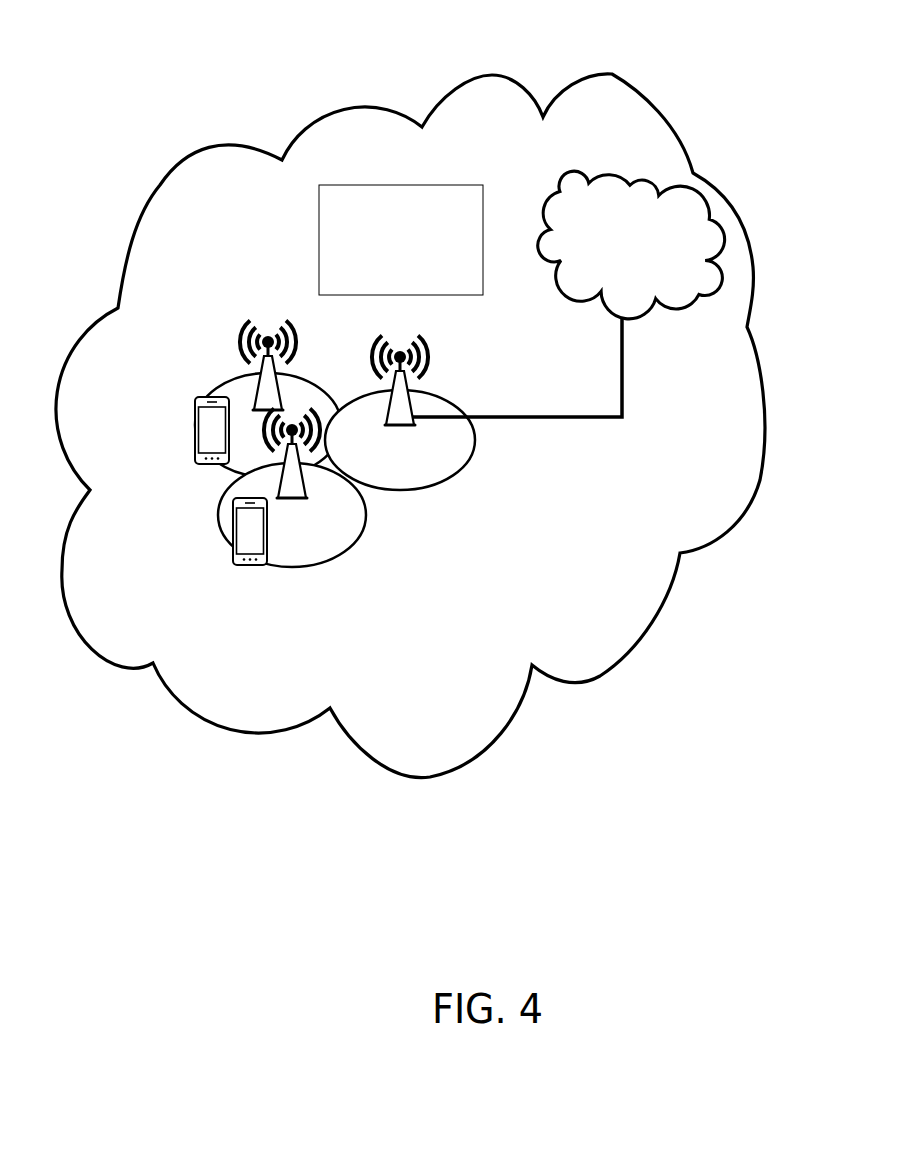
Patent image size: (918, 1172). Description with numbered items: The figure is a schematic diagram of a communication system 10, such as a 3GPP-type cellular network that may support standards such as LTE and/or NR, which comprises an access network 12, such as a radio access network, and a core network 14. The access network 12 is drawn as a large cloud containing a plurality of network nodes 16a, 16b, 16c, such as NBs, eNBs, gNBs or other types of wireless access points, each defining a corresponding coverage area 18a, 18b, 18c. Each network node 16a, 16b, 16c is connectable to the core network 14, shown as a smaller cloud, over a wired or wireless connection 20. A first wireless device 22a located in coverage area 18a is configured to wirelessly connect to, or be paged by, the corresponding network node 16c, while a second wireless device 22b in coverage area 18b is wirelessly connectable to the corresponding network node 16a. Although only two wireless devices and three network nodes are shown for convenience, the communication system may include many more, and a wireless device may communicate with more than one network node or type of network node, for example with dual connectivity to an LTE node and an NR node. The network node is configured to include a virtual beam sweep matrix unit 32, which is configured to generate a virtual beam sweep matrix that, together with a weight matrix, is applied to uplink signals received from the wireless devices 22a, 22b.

The communication system 10 is at (224, 54).
The access network 12 is at (490, 116).
The core network 14 is at (688, 250).
The network node 16a is at (305, 495).
The network node 16b is at (427, 354).
The network node 16c is at (240, 342).
The coverage area 18a is at (215, 392).
The coverage area 18b is at (367, 513).
The coverage area 18c is at (477, 440).
The wired or wireless connection 20 is at (622, 368).
The first wireless device 22a is at (195, 462).
The second wireless device 22b is at (233, 558).
The virtual beam sweep matrix unit 32 is at (270, 337).